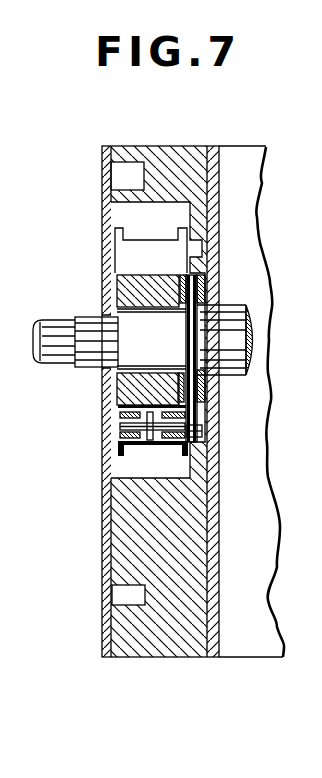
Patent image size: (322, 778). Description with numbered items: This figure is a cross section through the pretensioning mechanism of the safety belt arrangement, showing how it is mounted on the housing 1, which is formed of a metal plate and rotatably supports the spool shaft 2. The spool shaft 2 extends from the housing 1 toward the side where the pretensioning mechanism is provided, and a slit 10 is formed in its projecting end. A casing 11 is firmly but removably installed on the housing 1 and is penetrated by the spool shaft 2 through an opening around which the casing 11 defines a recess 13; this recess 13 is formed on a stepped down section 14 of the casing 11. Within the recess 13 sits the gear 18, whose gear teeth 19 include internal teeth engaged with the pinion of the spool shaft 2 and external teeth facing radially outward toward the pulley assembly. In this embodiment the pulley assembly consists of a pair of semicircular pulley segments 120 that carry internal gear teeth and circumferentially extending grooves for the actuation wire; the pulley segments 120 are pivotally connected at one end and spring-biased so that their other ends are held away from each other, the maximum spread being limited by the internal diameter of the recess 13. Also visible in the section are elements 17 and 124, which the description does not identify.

The housing 1 is at (259, 180).
The spool shaft 2 is at (252, 342).
The slit 10 is at (53, 355).
The casing 11 is at (192, 155).
The recess 13 is at (120, 212).
The stepped down section 14 is at (123, 595).
The recess 17 is at (124, 167).
The gear 18 is at (120, 292).
The gear teeth 19 is at (117, 400).
The pulley segments 120 is at (120, 248).
The fastener assembly 124 is at (202, 437).